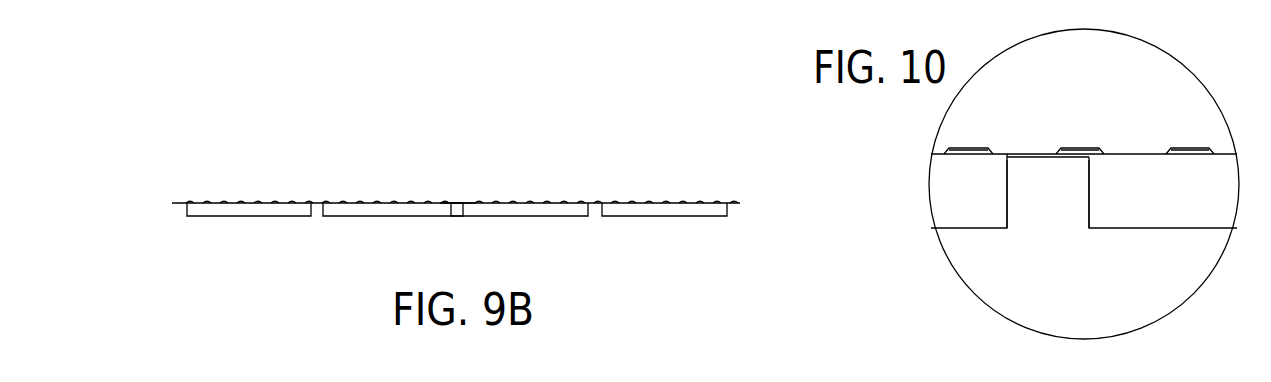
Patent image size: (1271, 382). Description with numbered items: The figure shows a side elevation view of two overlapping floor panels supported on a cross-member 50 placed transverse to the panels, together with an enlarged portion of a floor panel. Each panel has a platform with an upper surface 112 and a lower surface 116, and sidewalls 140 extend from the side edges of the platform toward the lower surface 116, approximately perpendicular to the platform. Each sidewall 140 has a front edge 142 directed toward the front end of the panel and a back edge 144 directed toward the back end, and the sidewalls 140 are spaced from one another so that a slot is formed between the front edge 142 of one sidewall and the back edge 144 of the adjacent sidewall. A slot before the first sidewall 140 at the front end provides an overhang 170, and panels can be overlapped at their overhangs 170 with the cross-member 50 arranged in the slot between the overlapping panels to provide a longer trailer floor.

In FIG. 9B, the cross-member 50 is at (452, 217).
In FIG. 9B, the sidewall 140 is at (522, 211).
In FIG. 10, the sidewall 140 is at (1084, 191).
In FIG. 9B, the overhang 170 is at (476, 185).
In FIG. 10, the upper surface 112 is at (1028, 153).
In FIG. 10, the lower surface 116 is at (1050, 158).
In FIG. 10, the front edge 142 is at (1008, 195).
In FIG. 10, the back edge 144 is at (1090, 190).